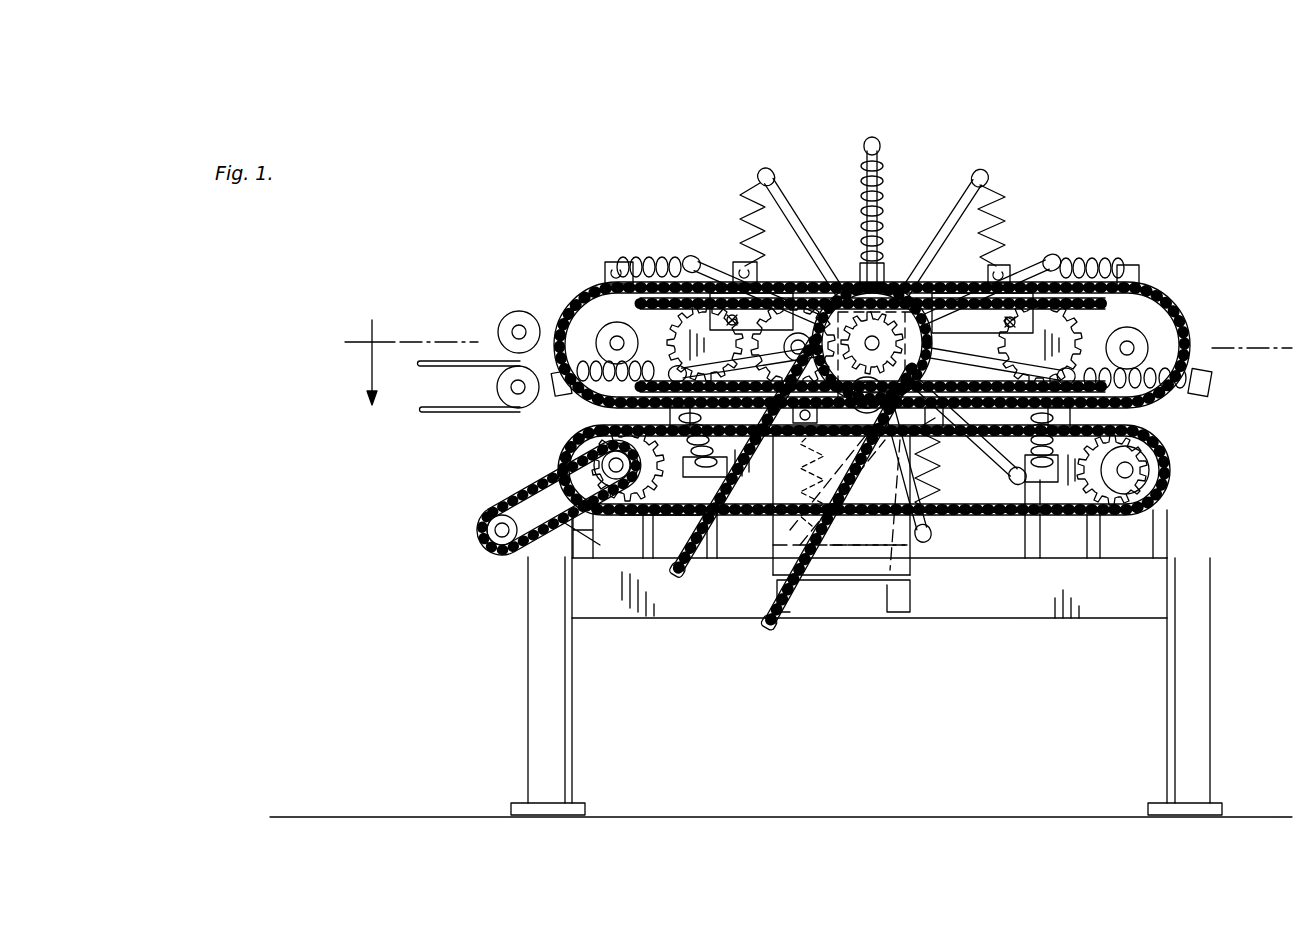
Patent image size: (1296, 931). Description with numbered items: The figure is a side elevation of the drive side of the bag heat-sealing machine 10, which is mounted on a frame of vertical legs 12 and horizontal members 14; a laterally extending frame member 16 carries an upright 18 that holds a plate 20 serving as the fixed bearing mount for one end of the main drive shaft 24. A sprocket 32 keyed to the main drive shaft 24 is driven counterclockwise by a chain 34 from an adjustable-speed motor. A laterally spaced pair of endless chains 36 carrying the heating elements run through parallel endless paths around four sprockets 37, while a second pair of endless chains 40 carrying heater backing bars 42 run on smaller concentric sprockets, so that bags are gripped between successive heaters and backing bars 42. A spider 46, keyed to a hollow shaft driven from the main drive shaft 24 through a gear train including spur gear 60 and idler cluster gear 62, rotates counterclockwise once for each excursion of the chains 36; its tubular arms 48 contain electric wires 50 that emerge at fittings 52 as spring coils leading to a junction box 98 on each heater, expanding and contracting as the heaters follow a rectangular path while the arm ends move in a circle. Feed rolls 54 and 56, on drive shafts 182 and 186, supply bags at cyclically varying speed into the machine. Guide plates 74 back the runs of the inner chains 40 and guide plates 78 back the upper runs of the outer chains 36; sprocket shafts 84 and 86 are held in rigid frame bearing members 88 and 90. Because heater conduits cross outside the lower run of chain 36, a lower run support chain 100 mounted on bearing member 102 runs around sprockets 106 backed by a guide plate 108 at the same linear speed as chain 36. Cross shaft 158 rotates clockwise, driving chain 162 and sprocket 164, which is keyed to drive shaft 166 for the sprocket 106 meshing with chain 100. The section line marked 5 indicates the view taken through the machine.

The machine 10 is at (705, 118).
The vertical legs 12 is at (537, 747).
The horizontal members 14 is at (995, 612).
The laterally extending frame member 16 is at (886, 600).
The upright 18 is at (862, 565).
The plate 20 is at (998, 365).
The main drive shaft 24 is at (918, 232).
The sprocket 32 is at (841, 501).
The chain 34 is at (765, 630).
The endless chains 36 is at (1178, 292).
The sprockets 37 is at (567, 310).
The endless chains 40 is at (1092, 262).
The heater backing bars 42 is at (1043, 248).
The spider 46 is at (845, 148).
The tubular arms 48 is at (968, 190).
The electric wires 50 is at (1010, 215).
The fittings 52 is at (1002, 178).
The feed roll 54 is at (520, 400).
The feed roll 56 is at (502, 305).
The spur gear 60 is at (940, 345).
The idler cluster gear 62 is at (761, 290).
The guide plates 74 is at (1065, 345).
The guide plates 78 is at (980, 300).
The sprocket shaft 84 is at (600, 333).
The sprocket shaft 86 is at (1137, 348).
The frame bearing member 88 is at (613, 540).
The frame bearing member 90 is at (1165, 526).
The junction box 98 is at (610, 262).
The lower run support chain 100 is at (1065, 520).
The bearing member 102 is at (724, 545).
The sprockets 106 is at (1170, 470).
The guide plate 108 is at (1010, 500).
The cross shaft 158 is at (480, 525).
The chain 162 is at (540, 488).
The sprocket 164 is at (592, 468).
The drive shaft 166 is at (625, 512).
The drive shaft 182 is at (515, 387).
The drive shaft 186 is at (515, 332).
The section line 5 is at (935, 566).